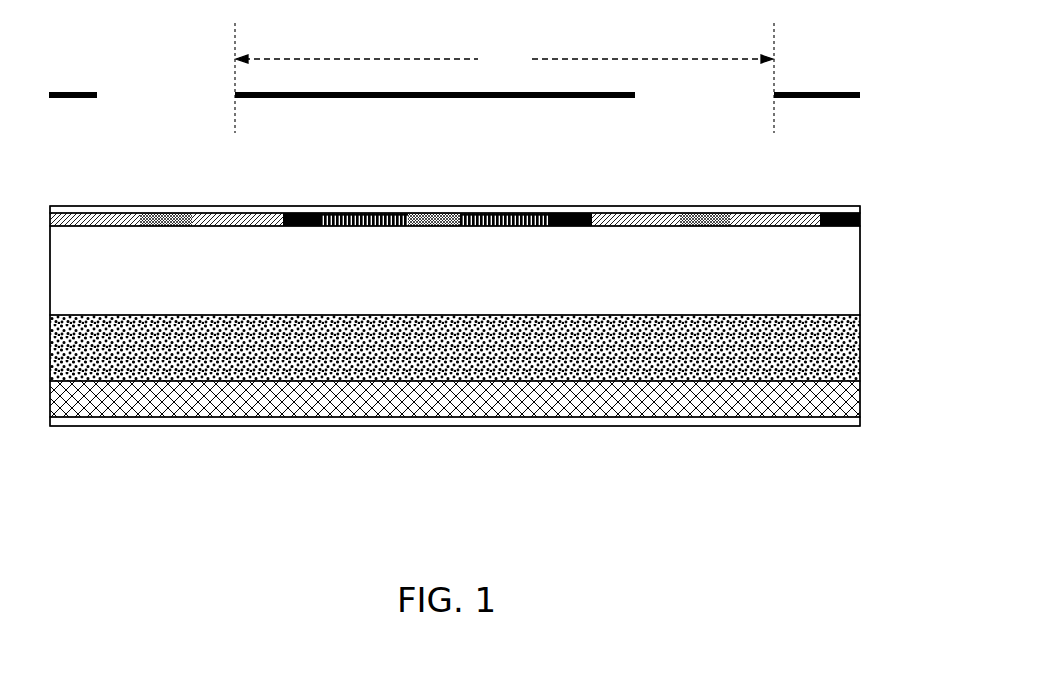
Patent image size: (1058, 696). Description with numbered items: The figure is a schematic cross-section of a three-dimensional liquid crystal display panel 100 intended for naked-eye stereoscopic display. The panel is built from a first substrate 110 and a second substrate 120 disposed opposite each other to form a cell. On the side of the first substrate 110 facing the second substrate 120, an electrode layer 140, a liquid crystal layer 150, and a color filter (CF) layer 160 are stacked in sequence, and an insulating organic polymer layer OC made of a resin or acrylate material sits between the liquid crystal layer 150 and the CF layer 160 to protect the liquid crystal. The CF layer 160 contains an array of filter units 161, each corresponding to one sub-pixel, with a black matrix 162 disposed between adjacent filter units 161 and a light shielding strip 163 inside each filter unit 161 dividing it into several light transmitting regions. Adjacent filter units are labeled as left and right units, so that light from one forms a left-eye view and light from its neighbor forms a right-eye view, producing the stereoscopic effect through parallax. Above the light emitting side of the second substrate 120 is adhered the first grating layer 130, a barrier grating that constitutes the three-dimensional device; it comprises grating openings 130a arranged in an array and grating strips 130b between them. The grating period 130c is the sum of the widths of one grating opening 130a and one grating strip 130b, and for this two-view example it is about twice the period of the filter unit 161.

The 3D liquid crystal display panel 100 is at (824, 441).
The first substrate 110 is at (850, 421).
The second substrate 120 is at (852, 208).
The first grating layer 130 is at (855, 91).
The grating opening 130a is at (139, 82).
The grating strip 130b is at (310, 92).
The grating period 130c is at (504, 78).
The electrode layer 140 is at (857, 395).
The liquid crystal layer 150 is at (850, 335).
The color filter (CF) layer 160 is at (861, 223).
The filter unit 161 is at (100, 212).
The black matrix 162 is at (303, 216).
The light shielding strip 163 is at (428, 216).
The organic polymer (OC) layer OC is at (850, 265).